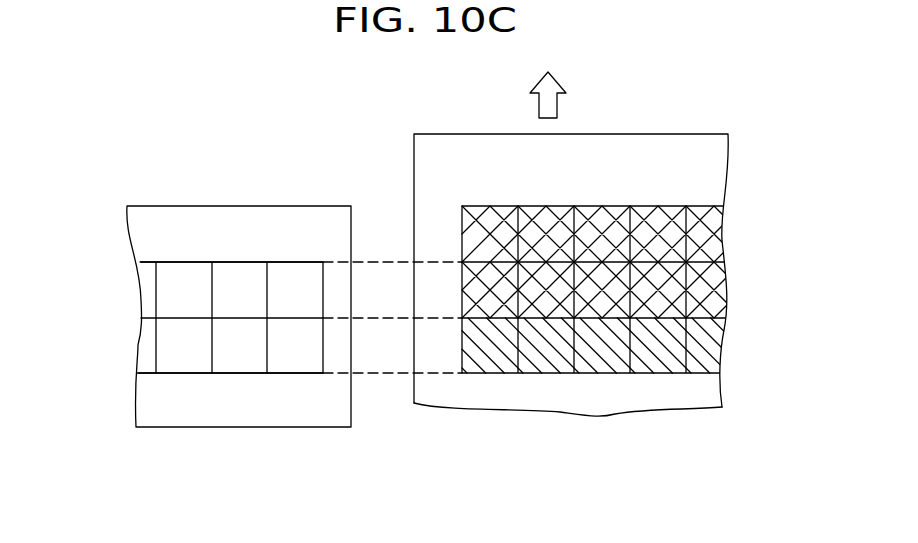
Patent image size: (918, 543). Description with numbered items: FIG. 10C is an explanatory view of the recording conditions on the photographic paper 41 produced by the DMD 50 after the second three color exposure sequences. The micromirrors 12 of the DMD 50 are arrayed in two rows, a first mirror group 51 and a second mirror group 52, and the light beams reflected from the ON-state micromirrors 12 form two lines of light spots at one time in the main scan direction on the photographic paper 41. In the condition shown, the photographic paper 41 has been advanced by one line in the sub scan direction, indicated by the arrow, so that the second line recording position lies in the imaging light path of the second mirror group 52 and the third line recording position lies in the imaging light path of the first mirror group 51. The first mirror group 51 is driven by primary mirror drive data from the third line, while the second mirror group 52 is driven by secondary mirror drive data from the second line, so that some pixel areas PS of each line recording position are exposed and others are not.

The micromirror 12 is at (188, 283).
The DMD 50 is at (297, 206).
The first mirror group 51 is at (137, 341).
The second mirror group 52 is at (138, 287).
The photographic paper 41 is at (638, 158).
The pixel area PS is at (657, 303).